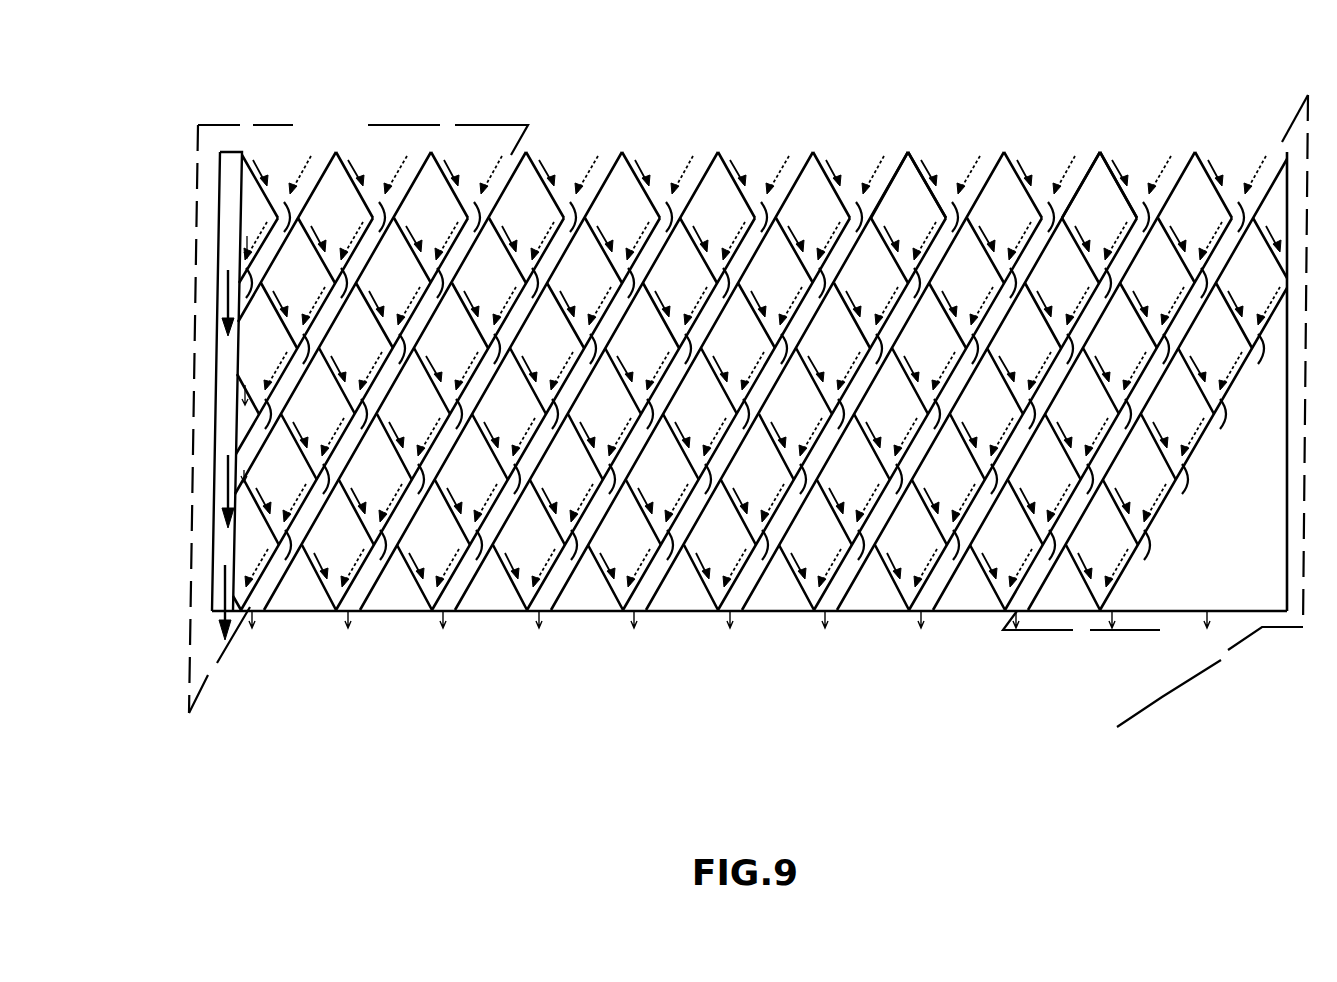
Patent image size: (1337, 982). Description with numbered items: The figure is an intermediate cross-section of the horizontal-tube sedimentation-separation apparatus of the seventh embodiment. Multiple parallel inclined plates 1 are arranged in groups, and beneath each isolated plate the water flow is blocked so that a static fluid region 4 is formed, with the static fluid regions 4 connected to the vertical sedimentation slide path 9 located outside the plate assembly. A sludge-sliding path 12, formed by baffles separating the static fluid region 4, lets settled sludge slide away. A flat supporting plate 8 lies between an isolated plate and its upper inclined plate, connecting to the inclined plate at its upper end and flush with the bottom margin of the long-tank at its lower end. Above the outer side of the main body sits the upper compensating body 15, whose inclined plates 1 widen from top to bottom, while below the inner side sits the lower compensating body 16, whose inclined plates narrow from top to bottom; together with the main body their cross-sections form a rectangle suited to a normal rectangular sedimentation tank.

The inclined plate 1 is at (800, 163).
The static fluid region 4 is at (893, 167).
The flat supporting plate 8 is at (608, 593).
The vertical sedimentation slide path 9 is at (220, 562).
The sludge-sliding path formed by baffles separating the static fluid region 12 is at (1070, 180).
The upper compensating body 15 is at (293, 125).
The lower compensating body 16 is at (1160, 630).